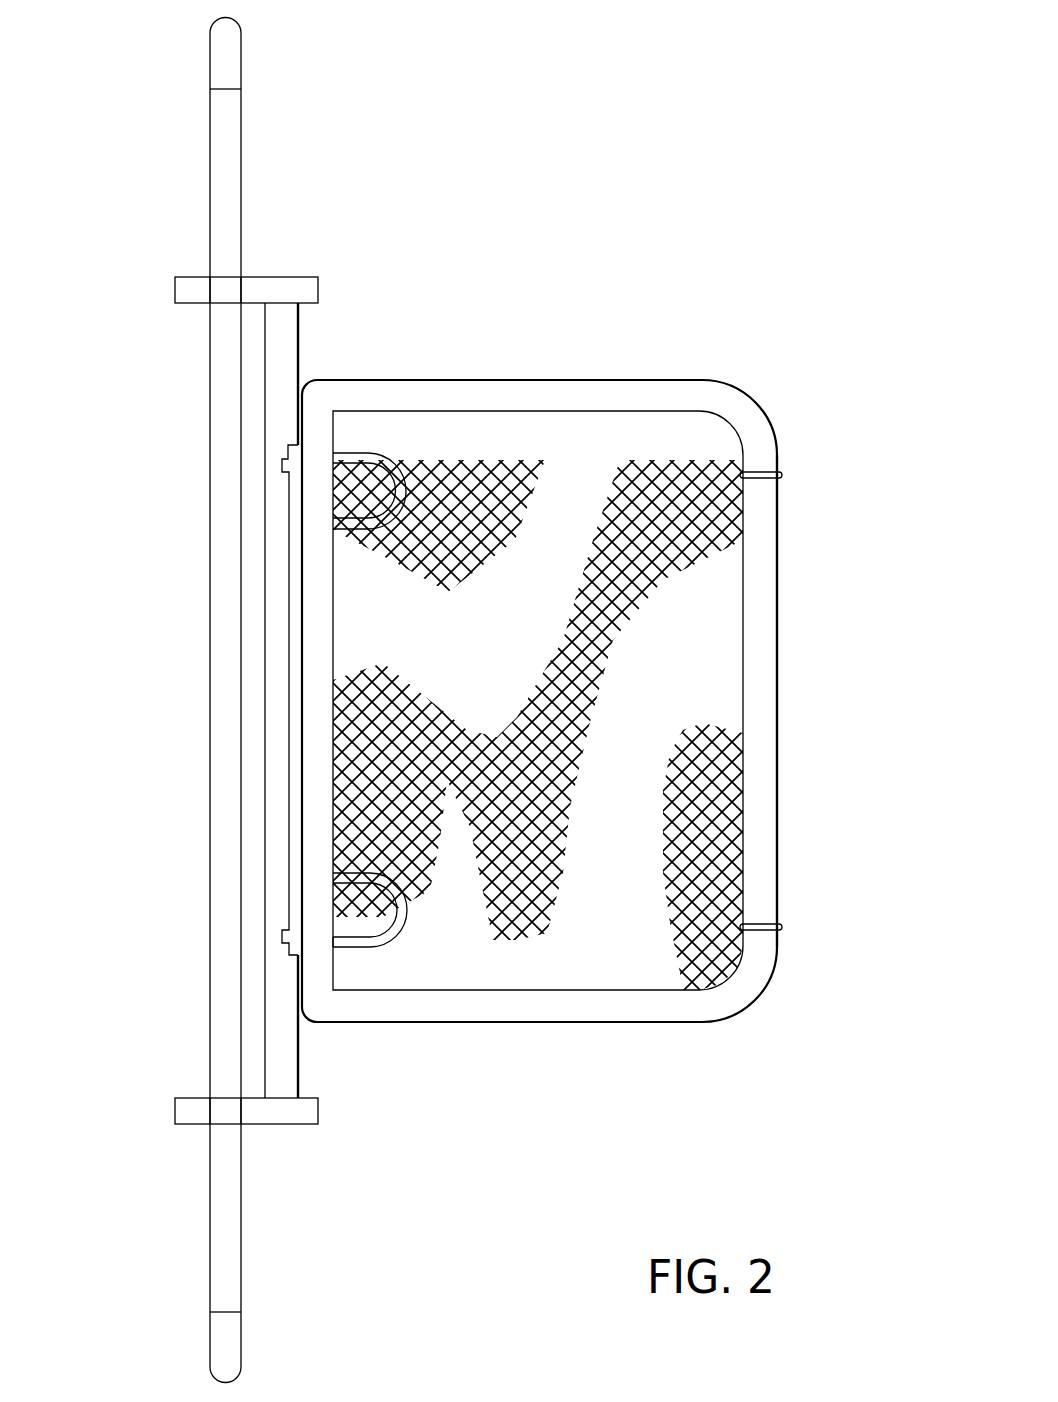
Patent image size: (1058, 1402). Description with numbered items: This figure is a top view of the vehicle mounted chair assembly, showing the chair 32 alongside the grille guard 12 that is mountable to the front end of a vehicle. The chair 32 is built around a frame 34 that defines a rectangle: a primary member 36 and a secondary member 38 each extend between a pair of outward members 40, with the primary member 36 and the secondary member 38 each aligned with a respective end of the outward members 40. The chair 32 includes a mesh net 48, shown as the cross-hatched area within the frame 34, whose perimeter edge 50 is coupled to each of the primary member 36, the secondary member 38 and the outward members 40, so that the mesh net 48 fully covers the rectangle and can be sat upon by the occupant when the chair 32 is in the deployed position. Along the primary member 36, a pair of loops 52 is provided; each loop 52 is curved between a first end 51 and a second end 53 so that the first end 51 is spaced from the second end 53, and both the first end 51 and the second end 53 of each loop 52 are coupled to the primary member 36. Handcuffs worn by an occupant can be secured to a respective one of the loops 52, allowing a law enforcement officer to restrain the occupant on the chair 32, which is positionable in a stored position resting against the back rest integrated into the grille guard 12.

The grille guard 12 is at (176, 185).
The chair 32 is at (587, 694).
The frame 34 is at (752, 402).
The primary member 36 is at (301, 718).
The secondary member 38 is at (778, 698).
The outward members 40 is at (528, 380).
The mesh net 48 is at (457, 488).
The perimeter edge 50 is at (552, 410).
The first end 51 is at (333, 946).
The loops 52 is at (395, 467).
The second end 53 is at (332, 853).